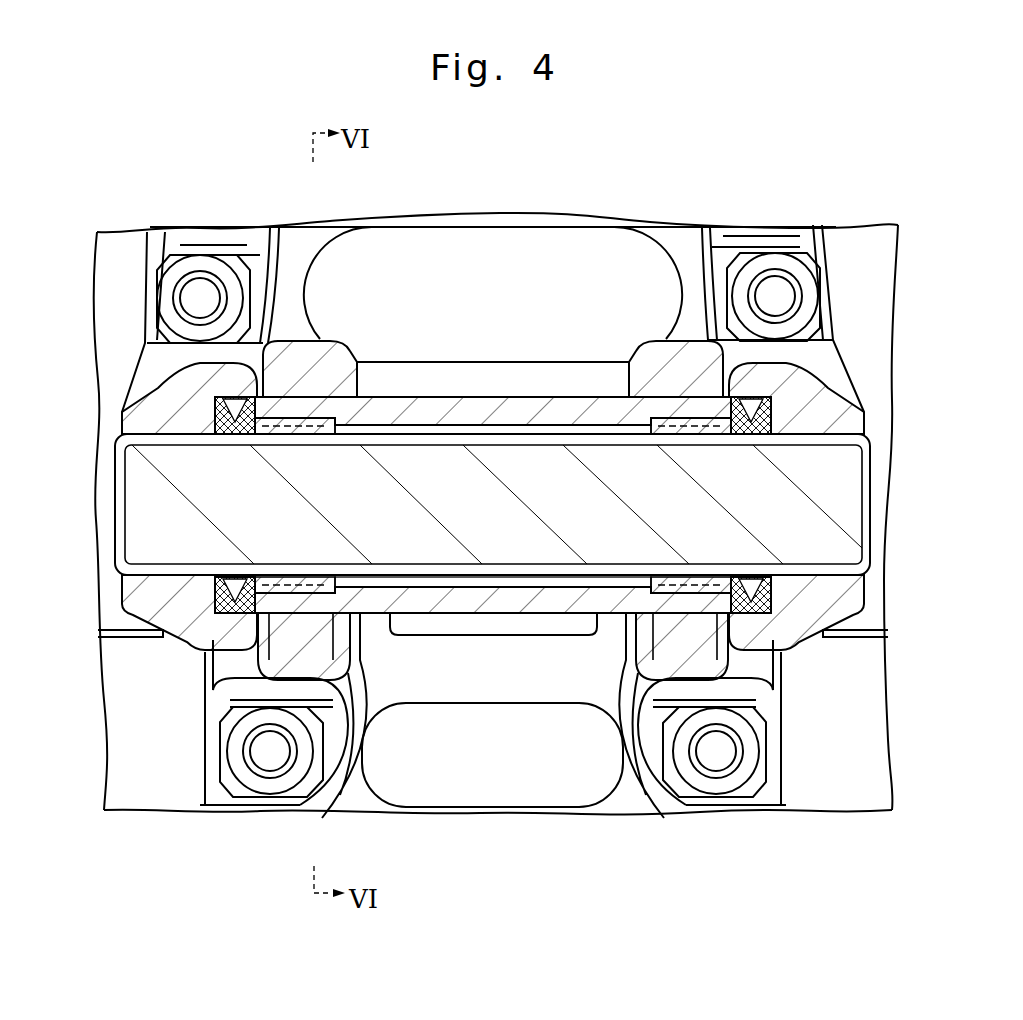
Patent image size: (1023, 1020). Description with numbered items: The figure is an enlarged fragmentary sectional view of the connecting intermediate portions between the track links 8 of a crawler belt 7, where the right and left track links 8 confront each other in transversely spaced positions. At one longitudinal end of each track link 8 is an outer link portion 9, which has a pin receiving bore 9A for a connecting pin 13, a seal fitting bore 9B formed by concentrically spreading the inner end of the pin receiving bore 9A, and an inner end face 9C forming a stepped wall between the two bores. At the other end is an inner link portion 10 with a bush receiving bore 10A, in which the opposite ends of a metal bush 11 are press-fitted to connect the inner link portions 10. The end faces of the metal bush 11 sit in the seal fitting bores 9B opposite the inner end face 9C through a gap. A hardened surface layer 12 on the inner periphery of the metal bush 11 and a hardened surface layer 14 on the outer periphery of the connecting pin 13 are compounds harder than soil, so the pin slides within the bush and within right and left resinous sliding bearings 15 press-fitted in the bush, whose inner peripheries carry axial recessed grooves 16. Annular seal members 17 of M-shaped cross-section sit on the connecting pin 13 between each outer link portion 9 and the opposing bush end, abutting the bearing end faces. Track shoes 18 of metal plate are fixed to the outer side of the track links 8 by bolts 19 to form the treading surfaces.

The crawler belt 7 is at (897, 268).
The track link 8 is at (157, 391).
The outer link portion 9 is at (145, 588).
The pin receiving bore 9A is at (173, 437).
The seal fitting bore 9B is at (230, 412).
The inner end face 9C is at (236, 400).
The inner link portion 10 is at (297, 655).
The bush receiving bore 10A is at (352, 640).
The metal bush 11 is at (520, 410).
The hardened surface layer on the side of bush 12 is at (457, 605).
The connecting pin 13 is at (827, 512).
The hardened surface layer on the side of connecting pin 14 is at (550, 605).
The resinous sliding bearing 15 is at (288, 425).
The recessed groove 16 is at (262, 690).
The annular seal member 17 is at (210, 690).
The track shoe 18 is at (112, 276).
The bolt 19 is at (720, 760).